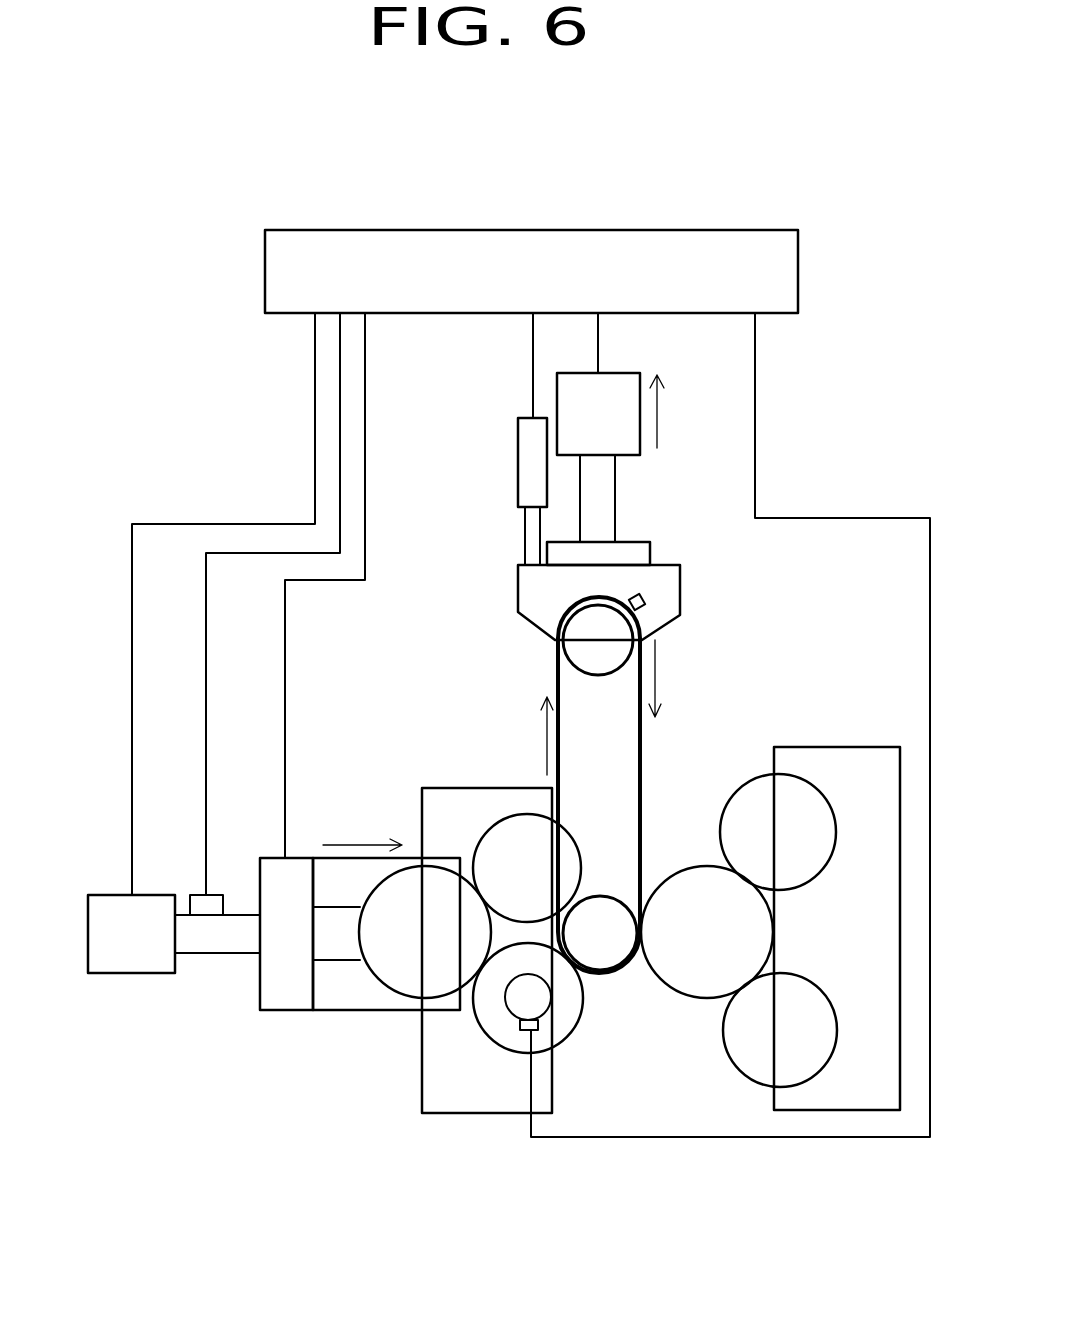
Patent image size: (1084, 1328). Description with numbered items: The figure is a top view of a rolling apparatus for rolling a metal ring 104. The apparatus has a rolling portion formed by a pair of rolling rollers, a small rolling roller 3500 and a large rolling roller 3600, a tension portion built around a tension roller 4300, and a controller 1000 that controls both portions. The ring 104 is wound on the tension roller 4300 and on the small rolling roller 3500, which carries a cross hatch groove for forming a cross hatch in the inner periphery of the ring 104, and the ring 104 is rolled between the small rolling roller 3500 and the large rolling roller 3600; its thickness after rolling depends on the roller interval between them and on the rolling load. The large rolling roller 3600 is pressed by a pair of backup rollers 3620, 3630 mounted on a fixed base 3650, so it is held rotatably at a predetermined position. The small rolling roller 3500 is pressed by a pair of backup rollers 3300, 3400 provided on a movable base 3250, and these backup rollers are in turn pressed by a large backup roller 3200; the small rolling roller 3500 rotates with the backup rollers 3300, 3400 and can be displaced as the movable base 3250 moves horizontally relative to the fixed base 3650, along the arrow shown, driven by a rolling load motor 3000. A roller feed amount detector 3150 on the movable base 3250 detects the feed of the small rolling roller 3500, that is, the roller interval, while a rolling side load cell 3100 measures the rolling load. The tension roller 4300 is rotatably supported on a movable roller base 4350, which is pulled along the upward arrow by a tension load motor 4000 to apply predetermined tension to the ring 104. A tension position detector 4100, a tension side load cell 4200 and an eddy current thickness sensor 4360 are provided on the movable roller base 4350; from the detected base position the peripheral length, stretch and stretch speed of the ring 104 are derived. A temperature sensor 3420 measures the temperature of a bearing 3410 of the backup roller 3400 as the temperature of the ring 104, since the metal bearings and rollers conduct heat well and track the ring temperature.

The controller 1000 is at (562, 230).
The tension load motor 4000 is at (620, 373).
The tension position detector 4100 is at (518, 452).
The tension side load cell 4200 is at (630, 547).
The movable roller base 4350 is at (665, 590).
The eddy current thickness sensor 4360 is at (645, 612).
The tension roller 4300 is at (585, 660).
The ring 104 is at (640, 733).
The small rolling roller 3500 is at (600, 910).
The large rolling roller 3600 is at (697, 893).
The backup roller 3620 is at (820, 840).
The backup roller 3630 is at (742, 1043).
The fixed base 3650 is at (863, 1093).
The movable base 3250 is at (455, 1113).
The backup roller 3300 is at (517, 840).
The backup roller 3400 is at (493, 1013).
The bearing 3410 is at (535, 995).
The temperature sensor 3420 is at (540, 1027).
The large backup roller 3200 is at (394, 1000).
The rolling side load cell 3100 is at (278, 988).
The rolling load motor 3000 is at (113, 965).
The roller feed amount detector 3150 is at (192, 893).